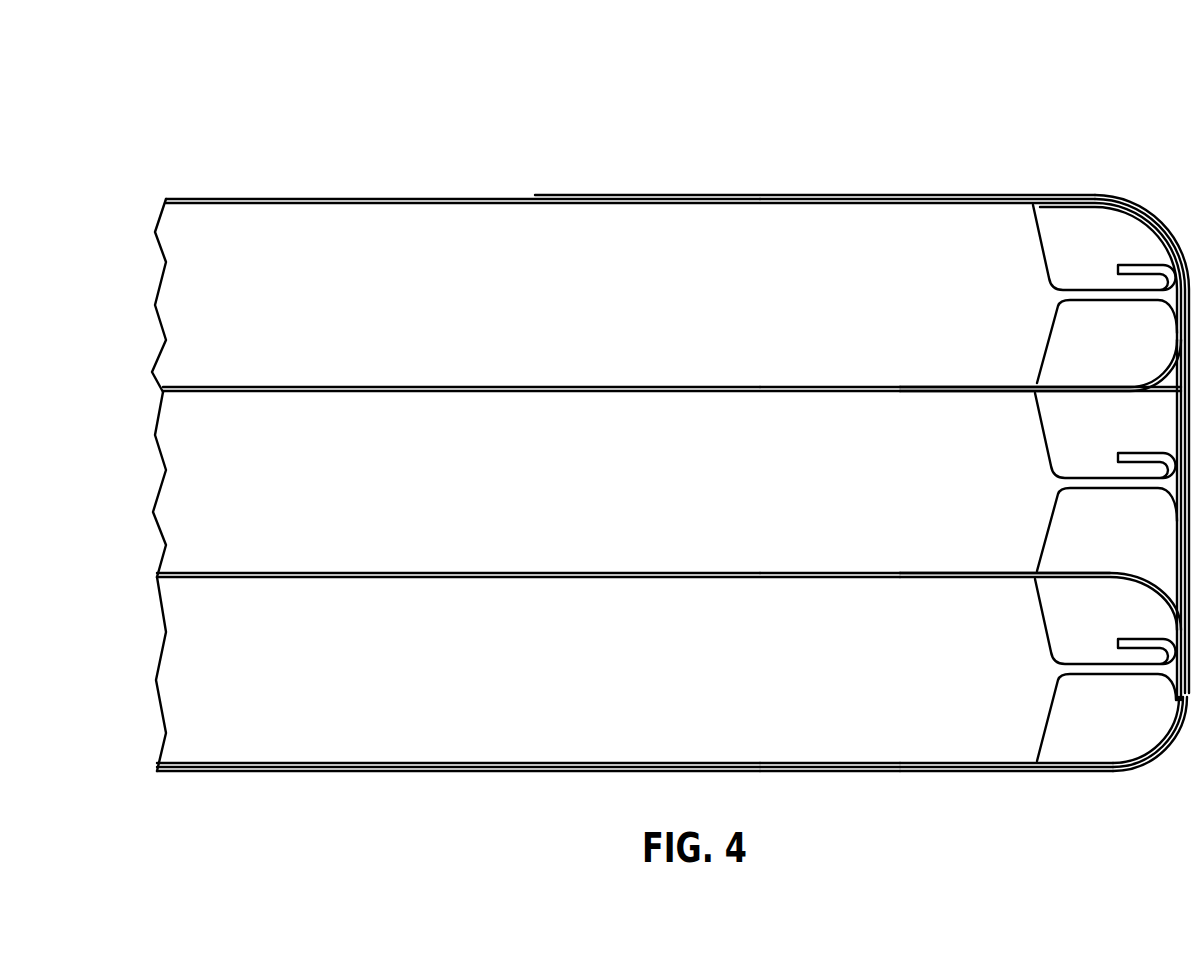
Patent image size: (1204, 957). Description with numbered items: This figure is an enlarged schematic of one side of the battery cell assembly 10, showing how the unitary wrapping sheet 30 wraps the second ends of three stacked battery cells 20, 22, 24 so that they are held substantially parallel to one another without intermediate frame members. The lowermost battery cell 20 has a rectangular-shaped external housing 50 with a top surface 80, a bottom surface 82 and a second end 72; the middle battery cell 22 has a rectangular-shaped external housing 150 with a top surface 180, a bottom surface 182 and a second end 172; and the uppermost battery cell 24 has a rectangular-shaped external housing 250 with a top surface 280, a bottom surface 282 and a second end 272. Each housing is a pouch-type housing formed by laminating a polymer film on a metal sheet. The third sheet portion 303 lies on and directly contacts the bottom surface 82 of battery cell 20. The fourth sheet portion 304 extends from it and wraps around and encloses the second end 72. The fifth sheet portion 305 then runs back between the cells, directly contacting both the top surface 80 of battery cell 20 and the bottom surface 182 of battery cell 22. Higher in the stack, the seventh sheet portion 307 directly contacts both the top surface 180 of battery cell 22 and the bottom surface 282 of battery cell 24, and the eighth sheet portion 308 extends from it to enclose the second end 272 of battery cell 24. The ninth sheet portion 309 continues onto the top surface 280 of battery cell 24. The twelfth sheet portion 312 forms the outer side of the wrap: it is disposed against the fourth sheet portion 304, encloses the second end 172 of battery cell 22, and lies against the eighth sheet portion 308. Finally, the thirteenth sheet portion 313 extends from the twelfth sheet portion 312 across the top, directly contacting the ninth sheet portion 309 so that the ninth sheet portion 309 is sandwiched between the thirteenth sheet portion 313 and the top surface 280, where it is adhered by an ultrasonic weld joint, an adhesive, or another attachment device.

The battery cell assembly 10 is at (683, 139).
The unitary wrapping sheet 30 is at (924, 196).
The thirteenth sheet portion 313 is at (743, 193).
The battery cell 24 is at (598, 314).
The battery cell 22 is at (601, 498).
The battery cell 20 is at (601, 685).
The top surface 280 is at (672, 205).
The ninth sheet portion 309 is at (830, 205).
The bottom surface 282 is at (672, 385).
The seventh sheet portion 307 is at (832, 385).
The second end 272 is at (1168, 308).
The eighth sheet portion 308 is at (1157, 363).
The top surface 180 is at (638, 393).
The rectangular-shaped external housing 250 is at (961, 364).
The bottom surface 182 is at (638, 571).
The fifth sheet portion 305 is at (795, 571).
The second end 172 is at (1168, 495).
The twelfth sheet portion 312 is at (1185, 548).
The bottom surface 82 is at (675, 579).
The rectangular-shaped external housing 150 is at (960, 550).
The top surface 80 is at (673, 761).
The third sheet portion 303 is at (830, 761).
The rectangular-shaped external housing 50 is at (960, 727).
The second end 72 is at (1168, 678).
The fourth sheet portion 304 is at (1157, 730).